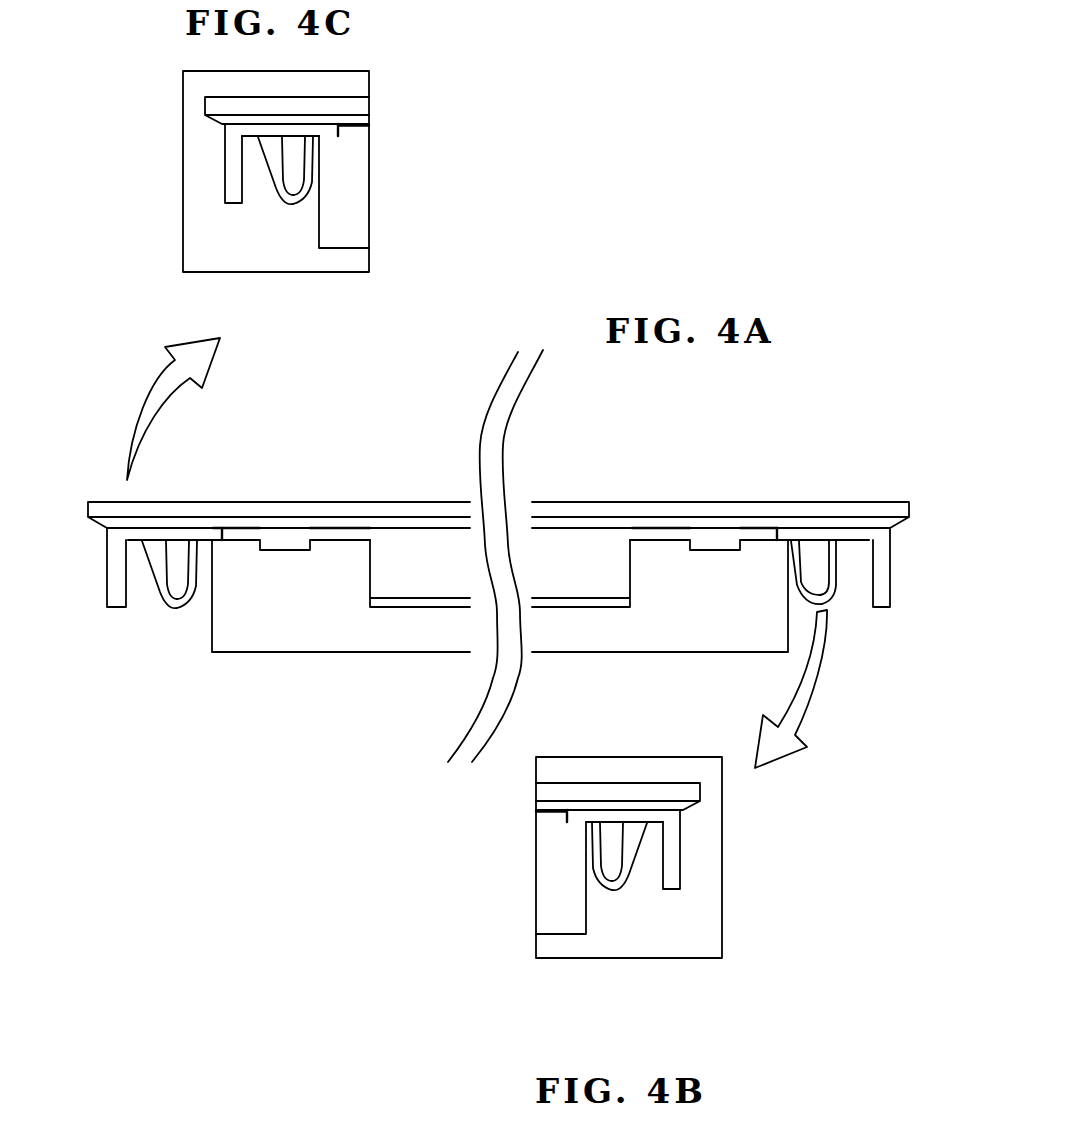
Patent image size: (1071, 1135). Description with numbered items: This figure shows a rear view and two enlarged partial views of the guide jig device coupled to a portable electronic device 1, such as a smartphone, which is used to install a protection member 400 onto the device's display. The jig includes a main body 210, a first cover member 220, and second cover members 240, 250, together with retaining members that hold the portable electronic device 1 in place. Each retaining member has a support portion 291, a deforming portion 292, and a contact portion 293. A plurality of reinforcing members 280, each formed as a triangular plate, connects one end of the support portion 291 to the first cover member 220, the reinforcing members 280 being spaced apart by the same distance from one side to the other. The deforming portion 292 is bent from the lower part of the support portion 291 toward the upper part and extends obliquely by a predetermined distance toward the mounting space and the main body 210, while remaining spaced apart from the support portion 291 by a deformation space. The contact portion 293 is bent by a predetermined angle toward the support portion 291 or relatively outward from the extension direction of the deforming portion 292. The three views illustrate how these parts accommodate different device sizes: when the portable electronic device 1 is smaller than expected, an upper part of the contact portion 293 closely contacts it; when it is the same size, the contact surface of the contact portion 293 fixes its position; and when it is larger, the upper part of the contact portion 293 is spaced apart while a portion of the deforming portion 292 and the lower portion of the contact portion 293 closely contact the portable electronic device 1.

In FIG. 4A, the portable electronic device 1 is at (278, 608).
In FIG. 4B, the portable electronic device 1 is at (555, 898).
In FIG. 4C, the portable electronic device 1 is at (355, 205).
In FIG. 4A, the main body 210 is at (435, 512).
In FIG. 4A, the first cover member 220 is at (379, 542).
In FIG. 4A, the second cover member 240 is at (884, 598).
In FIG. 4B, the second cover member 240 is at (682, 873).
In FIG. 4C, the second cover member 240 is at (225, 186).
In FIG. 4A, the second cover member 250 is at (108, 607).
In FIG. 4A, the reinforcing member 280 is at (130, 588).
In FIG. 4B, the reinforcing member 280 is at (642, 828).
In FIG. 4C, the reinforcing member 280 is at (243, 137).
In FIG. 4A, the support portion 291 is at (167, 592).
In FIG. 4B, the support portion 291 is at (628, 862).
In FIG. 4C, the support portion 291 is at (277, 182).
In FIG. 4A, the deforming portion 292 is at (197, 590).
In FIG. 4B, the deforming portion 292 is at (592, 860).
In FIG. 4C, the deforming portion 292 is at (316, 186).
In FIG. 4A, the contact portion 293 is at (214, 544).
In FIG. 4B, the contact portion 293 is at (585, 840).
In FIG. 4C, the contact portion 293 is at (323, 152).
In FIG. 4A, the protection member 400 is at (667, 528).